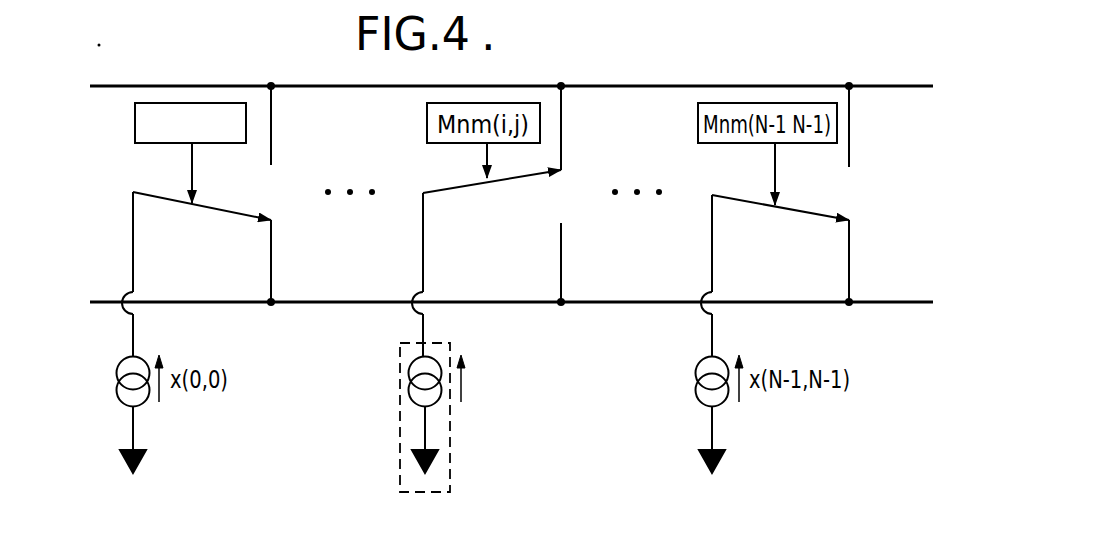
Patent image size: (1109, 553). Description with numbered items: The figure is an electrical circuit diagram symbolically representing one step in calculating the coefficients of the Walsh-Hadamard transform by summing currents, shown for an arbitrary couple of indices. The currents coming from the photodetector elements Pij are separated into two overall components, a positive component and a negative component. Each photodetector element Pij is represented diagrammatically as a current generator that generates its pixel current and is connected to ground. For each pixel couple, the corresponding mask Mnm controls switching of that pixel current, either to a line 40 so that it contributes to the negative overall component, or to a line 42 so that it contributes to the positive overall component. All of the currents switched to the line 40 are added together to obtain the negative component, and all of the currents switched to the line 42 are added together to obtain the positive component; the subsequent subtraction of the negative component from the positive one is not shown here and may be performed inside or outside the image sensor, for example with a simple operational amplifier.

The line 40 is at (893, 86).
The line 42 is at (899, 305).
The photodetector element Pij is at (451, 455).
The mask Mnm is at (190, 153).